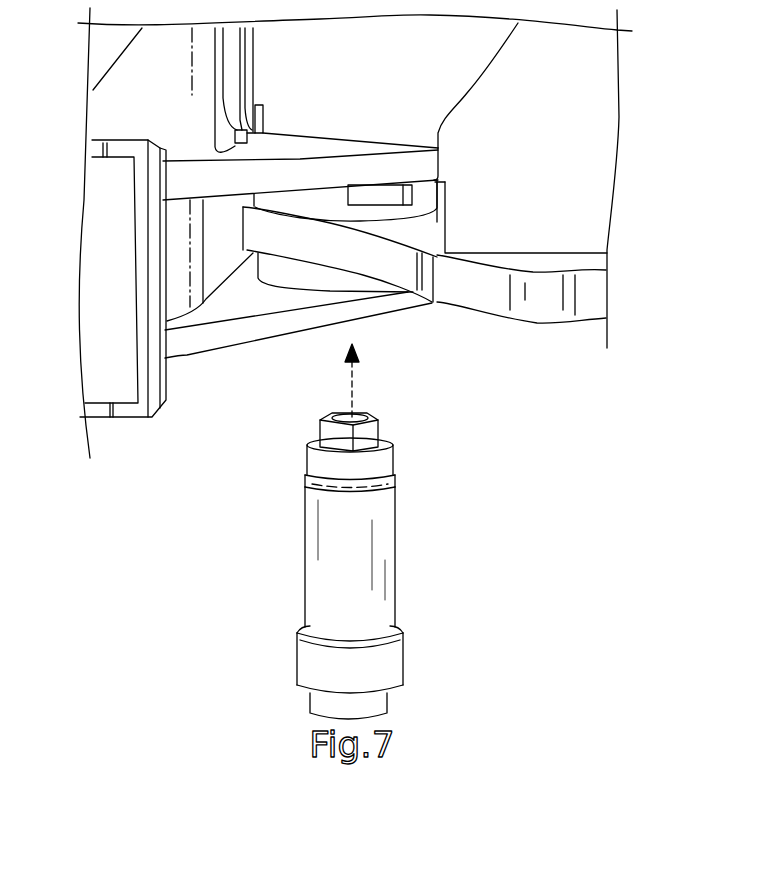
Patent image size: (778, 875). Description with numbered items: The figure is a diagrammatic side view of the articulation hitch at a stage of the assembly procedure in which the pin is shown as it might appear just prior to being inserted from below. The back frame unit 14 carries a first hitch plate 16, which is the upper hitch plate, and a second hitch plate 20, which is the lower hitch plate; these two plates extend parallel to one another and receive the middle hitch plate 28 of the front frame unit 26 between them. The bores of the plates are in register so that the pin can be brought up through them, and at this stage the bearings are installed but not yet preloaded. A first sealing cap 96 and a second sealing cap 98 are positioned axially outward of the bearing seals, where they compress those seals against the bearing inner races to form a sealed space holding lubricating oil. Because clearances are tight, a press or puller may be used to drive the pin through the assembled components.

The frame unit 14 is at (111, 67).
The first hitch plate 16 is at (290, 170).
The second hitch plate 20 is at (237, 347).
The front frame unit 26 is at (488, 68).
The middle hitch plate 28 is at (462, 297).
The first sealing cap 96 is at (428, 203).
The second sealing cap 98 is at (288, 276).